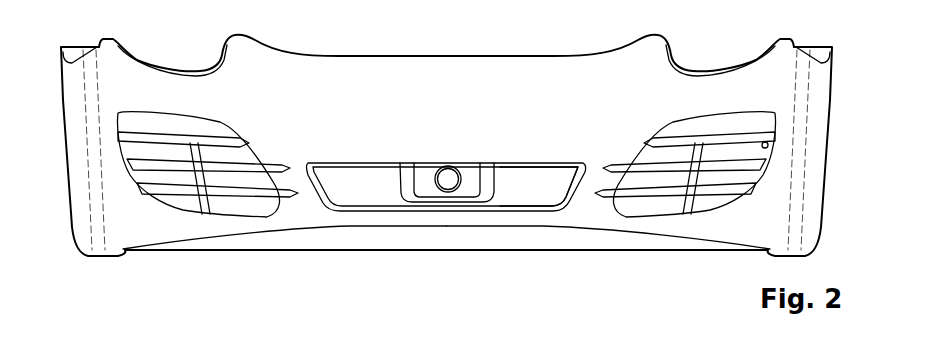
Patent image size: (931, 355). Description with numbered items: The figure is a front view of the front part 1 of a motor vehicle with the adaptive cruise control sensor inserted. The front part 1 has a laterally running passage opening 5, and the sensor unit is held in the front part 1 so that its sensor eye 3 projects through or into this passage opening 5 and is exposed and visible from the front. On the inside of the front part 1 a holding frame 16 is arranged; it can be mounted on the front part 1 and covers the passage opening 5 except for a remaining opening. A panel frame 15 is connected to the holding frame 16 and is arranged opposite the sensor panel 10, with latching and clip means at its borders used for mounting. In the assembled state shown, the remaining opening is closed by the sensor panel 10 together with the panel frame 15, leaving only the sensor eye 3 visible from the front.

The front part 1 is at (613, 62).
The holding frame 16 is at (365, 198).
The sensor panel 10 is at (425, 187).
The panel frame 15 is at (483, 187).
The sensor eye 3 is at (448, 184).
The passage opening 5 is at (528, 200).